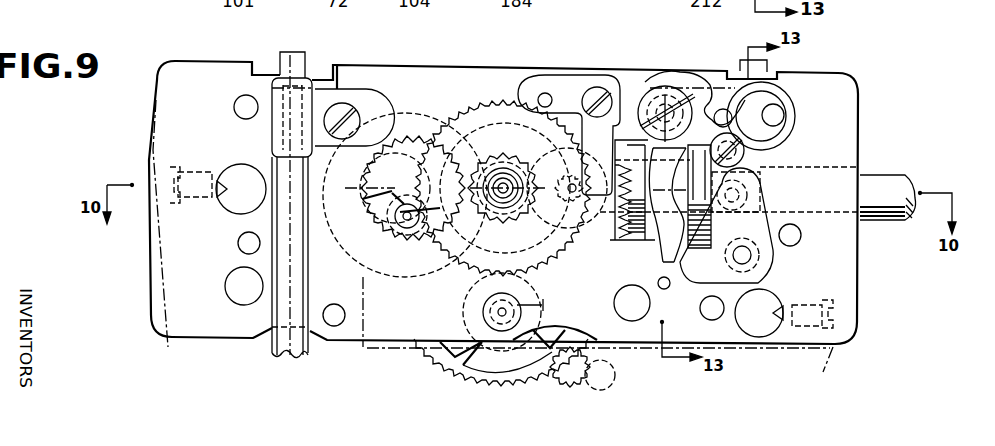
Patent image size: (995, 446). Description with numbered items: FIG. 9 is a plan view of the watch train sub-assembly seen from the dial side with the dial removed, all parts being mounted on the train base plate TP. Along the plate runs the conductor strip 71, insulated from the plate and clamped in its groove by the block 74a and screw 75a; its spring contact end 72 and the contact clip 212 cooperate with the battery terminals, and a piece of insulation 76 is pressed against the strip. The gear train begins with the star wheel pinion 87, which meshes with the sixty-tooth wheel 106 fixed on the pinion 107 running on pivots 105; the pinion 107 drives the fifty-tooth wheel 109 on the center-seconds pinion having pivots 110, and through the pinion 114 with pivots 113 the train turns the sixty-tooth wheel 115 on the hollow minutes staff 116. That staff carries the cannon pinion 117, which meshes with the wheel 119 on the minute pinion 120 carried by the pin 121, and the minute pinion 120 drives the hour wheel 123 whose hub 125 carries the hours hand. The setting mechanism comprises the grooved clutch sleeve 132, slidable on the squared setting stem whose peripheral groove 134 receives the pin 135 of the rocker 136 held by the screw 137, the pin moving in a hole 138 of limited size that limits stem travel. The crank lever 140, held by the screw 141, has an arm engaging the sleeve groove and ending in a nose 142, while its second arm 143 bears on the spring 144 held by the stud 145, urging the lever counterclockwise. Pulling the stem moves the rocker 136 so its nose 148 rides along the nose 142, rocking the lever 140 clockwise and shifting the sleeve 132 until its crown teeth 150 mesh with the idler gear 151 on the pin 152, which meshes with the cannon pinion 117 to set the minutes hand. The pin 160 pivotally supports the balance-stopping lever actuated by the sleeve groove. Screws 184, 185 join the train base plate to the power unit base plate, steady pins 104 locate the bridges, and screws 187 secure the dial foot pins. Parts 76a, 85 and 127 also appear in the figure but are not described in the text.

The conductor strip 71 is at (281, 354).
The spring contact end 72 is at (300, 58).
The block 74a is at (380, 113).
The screw 75a is at (340, 107).
The piece of insulation 76 is at (273, 232).
The collar 76a is at (285, 153).
The gear 85 is at (588, 358).
The star wheel pinion 87 is at (612, 378).
The steady pins 104 is at (343, 341).
The pivots 105 is at (545, 297).
The wheel 106 is at (428, 364).
The pinion 107 is at (465, 296).
The wheel 109 is at (487, 236).
The pivots 110 is at (503, 177).
The pivots 113 is at (407, 216).
The pinion 114 is at (393, 183).
The wheel 115 is at (445, 115).
The hollow minutes staff 116 is at (497, 183).
The cannon pinion 117 is at (548, 128).
The wheel 119 is at (407, 135).
The minute pinion 120 is at (420, 233).
The pin 121 is at (400, 233).
The hour wheel 123 is at (502, 116).
The hub 125 is at (495, 203).
The shaft 127 is at (430, 210).
The clutch sleeve 132 is at (640, 232).
The peripheral groove 134 is at (745, 170).
The pin 135 is at (756, 186).
The rocker 136 is at (770, 252).
The screw 137 is at (752, 258).
The hole 138 is at (765, 205).
The crank lever 140 is at (696, 246).
The screw 141 is at (650, 95).
The nose 142 is at (712, 228).
The second arm 143 is at (695, 80).
The spring 144 is at (787, 100).
The stud 145 is at (749, 137).
The nose 148 is at (730, 258).
The crown teeth 150 is at (626, 147).
The idler gear 151 is at (596, 235).
The pin 152 is at (576, 204).
The pin 160 is at (658, 281).
The screw 184 is at (546, 311).
The screw 185 is at (233, 293).
The screws 187 is at (208, 152).
The contact clip 212 is at (770, 67).
The train base plate TP is at (152, 248).